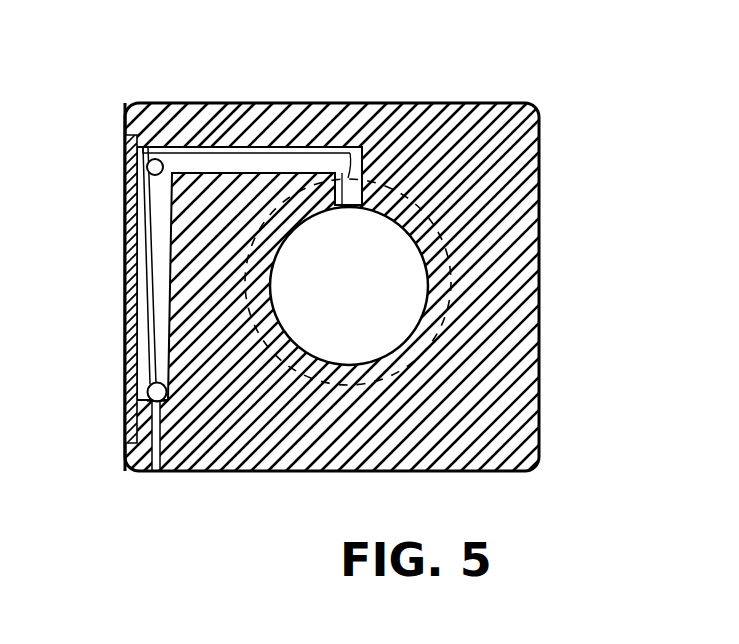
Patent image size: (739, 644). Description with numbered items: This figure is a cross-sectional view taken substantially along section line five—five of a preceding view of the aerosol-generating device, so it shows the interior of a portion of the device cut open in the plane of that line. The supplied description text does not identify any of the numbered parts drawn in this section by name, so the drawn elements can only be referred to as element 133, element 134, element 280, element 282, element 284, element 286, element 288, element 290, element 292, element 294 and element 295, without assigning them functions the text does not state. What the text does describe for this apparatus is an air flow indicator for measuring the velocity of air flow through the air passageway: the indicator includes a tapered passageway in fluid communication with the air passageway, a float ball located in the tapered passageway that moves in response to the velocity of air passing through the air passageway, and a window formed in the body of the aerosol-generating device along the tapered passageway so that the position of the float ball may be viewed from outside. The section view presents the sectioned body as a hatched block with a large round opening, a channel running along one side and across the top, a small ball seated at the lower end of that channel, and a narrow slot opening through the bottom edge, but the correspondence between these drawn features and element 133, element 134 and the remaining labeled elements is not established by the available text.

The valve body block 133 is at (541, 168).
The bore 134 is at (386, 304).
The flexible arm 280 is at (155, 317).
The ball 282 is at (147, 390).
The thin wall 284 is at (125, 263).
The thin member 286 is at (249, 162).
The bent end 288 is at (350, 178).
The junction 290 is at (150, 148).
The outlet slot 292 is at (157, 471).
The seat 294 is at (165, 404).
The pivot bulb 295 is at (149, 172).